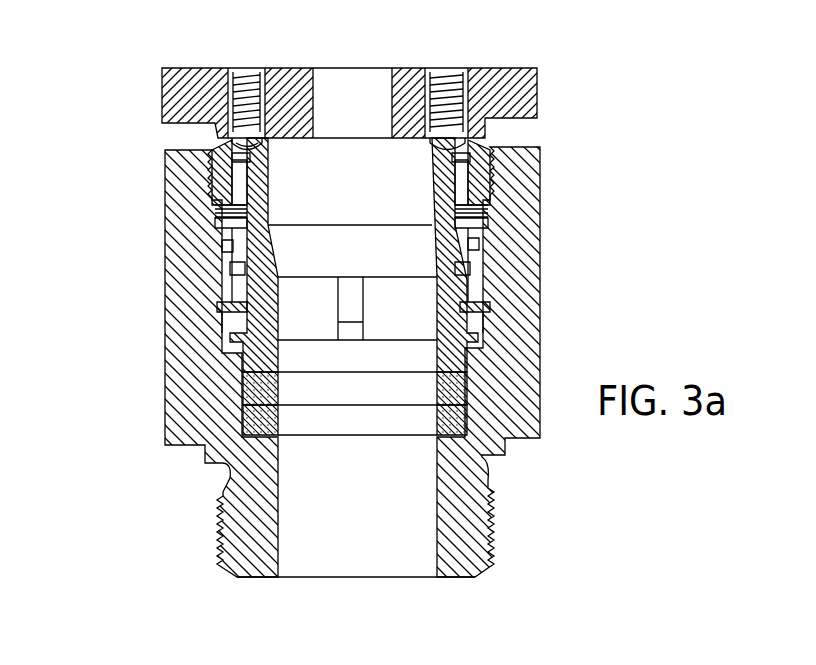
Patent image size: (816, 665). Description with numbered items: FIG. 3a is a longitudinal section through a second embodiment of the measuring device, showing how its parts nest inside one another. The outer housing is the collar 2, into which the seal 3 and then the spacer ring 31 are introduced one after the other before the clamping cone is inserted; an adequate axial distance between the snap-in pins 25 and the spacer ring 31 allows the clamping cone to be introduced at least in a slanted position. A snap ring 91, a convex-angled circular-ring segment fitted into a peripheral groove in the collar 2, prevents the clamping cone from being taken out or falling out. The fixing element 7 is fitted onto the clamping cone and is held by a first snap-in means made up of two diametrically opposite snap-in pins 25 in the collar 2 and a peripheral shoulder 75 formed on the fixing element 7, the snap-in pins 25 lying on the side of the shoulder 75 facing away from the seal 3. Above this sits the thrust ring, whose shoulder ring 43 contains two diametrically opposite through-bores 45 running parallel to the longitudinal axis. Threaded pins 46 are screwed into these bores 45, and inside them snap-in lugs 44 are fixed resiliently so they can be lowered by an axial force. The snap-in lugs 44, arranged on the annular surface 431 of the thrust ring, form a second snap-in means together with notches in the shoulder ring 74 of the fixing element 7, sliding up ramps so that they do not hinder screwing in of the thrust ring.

The collar 2 is at (125, 283).
The seal 3 is at (243, 398).
The fixing element 7 is at (462, 181).
The snap-in pins 25 is at (225, 246).
The spacer ring 31 is at (245, 368).
The shoulder ring 43 is at (410, 72).
The snap-in lugs 44 is at (263, 143).
The through-bores 45 is at (176, 98).
The threaded pins 46 is at (237, 82).
The shoulder ring 74 is at (213, 152).
The peripheral shoulder 75 is at (235, 270).
The snap ring 91 is at (220, 307).
The annular surface 431 is at (278, 87).